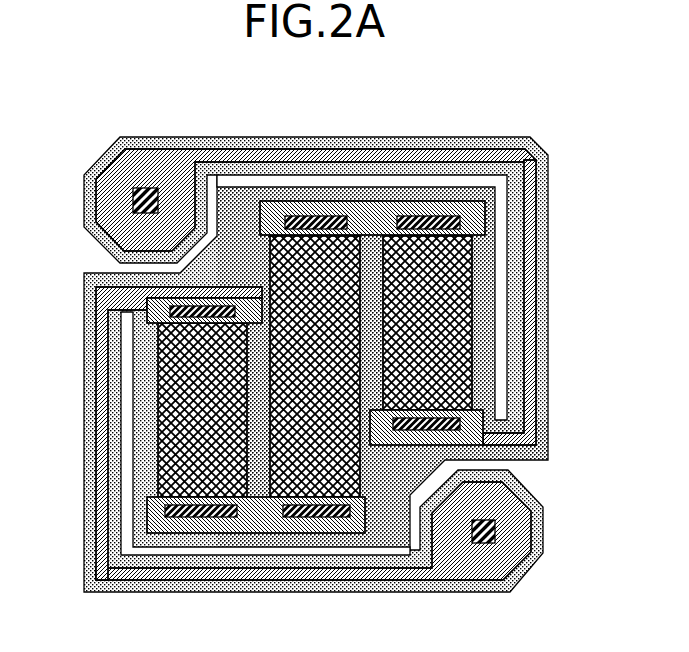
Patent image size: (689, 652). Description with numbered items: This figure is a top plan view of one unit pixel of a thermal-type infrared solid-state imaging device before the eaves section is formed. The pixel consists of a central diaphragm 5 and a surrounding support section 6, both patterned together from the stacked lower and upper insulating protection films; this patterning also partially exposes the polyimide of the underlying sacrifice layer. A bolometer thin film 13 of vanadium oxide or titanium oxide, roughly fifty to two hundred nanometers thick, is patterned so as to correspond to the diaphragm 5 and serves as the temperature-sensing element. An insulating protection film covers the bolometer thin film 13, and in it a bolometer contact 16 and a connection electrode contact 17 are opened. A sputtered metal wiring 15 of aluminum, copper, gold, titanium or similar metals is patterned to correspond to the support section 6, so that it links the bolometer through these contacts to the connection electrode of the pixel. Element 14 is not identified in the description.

The diaphragm 5 is at (143, 423).
The support section 6 is at (548, 300).
The bolometer thin film 13 is at (318, 215).
The connection portion 14 is at (205, 283).
The metal wiring 15 is at (540, 357).
The bolometer contact 16 is at (316, 195).
The connection electrode contact 17 is at (145, 188).